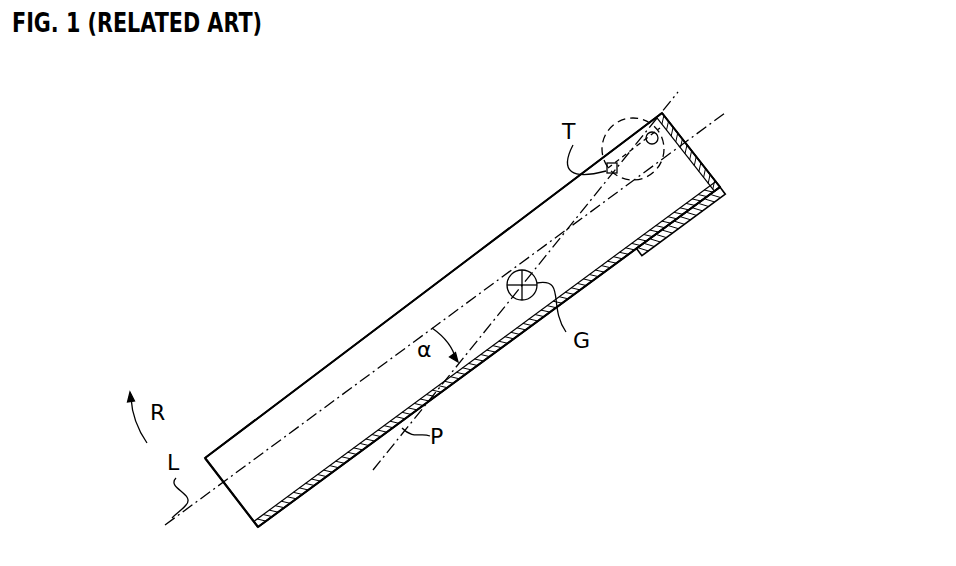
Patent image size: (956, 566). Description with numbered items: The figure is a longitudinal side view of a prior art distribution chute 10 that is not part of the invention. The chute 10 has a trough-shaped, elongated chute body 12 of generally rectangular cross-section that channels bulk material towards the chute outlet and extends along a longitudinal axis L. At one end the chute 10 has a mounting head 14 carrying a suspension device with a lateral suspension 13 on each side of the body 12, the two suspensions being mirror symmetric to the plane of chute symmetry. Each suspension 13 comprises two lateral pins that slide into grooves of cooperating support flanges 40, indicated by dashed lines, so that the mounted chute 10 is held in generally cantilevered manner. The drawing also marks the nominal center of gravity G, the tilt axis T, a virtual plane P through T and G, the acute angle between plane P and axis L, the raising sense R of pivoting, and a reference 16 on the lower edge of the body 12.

The distribution chute 10 is at (315, 198).
The chute body 12 is at (358, 326).
The lateral suspension 13 is at (634, 174).
The mounting head 14 is at (682, 228).
The edge profile 16 is at (300, 470).
The support flanges 40 is at (626, 116).